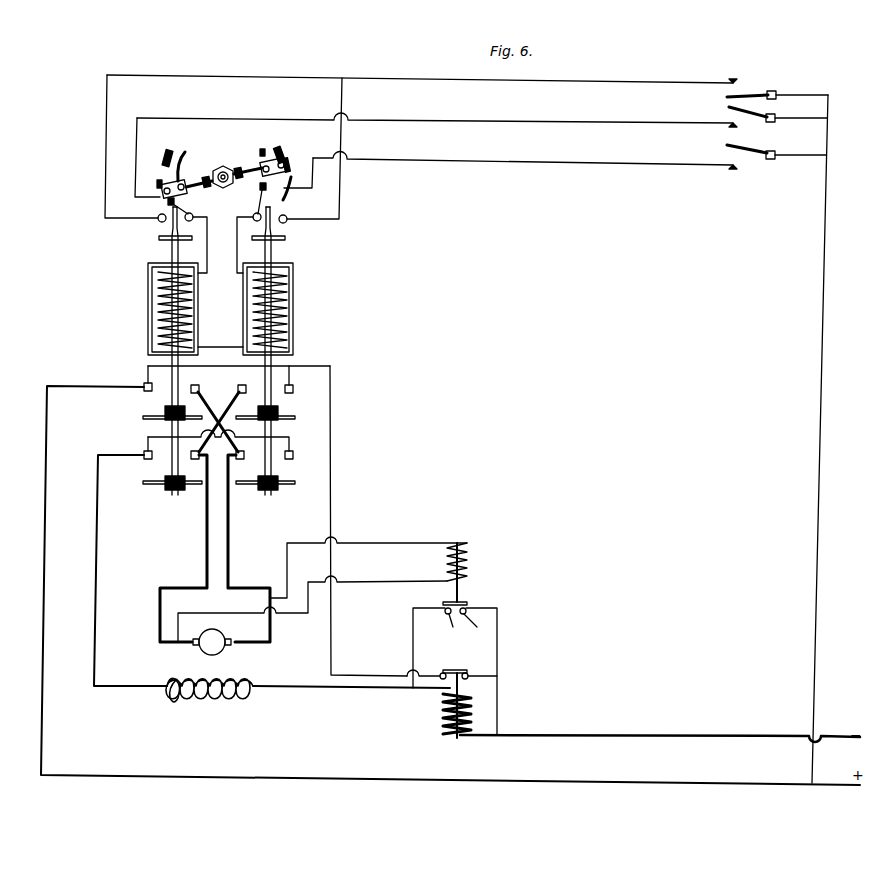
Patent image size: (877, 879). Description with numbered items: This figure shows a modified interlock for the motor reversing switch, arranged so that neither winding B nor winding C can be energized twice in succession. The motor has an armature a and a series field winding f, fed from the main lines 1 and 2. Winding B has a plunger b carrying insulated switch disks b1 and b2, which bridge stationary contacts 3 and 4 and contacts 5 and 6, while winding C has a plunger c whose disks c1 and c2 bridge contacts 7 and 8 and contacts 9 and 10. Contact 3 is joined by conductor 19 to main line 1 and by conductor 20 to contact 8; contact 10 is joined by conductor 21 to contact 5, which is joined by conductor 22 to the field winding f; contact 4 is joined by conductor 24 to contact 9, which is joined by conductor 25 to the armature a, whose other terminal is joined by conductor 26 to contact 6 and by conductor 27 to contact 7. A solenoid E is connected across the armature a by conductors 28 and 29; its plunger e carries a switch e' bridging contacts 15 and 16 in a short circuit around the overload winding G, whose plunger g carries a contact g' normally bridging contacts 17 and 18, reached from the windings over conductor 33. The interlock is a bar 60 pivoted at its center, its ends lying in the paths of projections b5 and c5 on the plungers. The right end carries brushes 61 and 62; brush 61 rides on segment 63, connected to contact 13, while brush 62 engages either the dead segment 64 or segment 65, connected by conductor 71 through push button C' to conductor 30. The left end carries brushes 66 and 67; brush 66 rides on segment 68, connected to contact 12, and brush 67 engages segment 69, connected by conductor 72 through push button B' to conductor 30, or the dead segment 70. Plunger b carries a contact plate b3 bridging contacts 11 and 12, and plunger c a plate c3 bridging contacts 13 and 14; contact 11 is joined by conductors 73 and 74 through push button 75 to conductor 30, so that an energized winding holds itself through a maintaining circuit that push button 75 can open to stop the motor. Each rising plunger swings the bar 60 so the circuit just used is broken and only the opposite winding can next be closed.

The main line 1 is at (667, 783).
The main line 2 is at (674, 733).
The stationary contact 3 is at (143, 391).
The stationary contact 4 is at (200, 389).
The stationary contact 5 is at (145, 459).
The stationary contact 6 is at (195, 460).
The stationary contact 7 is at (246, 388).
The stationary contact 8 is at (293, 389).
The stationary contact 9 is at (241, 460).
The stationary contact 10 is at (293, 456).
The stationary contact 11 is at (158, 216).
The stationary contact 12 is at (193, 215).
The stationary contact 13 is at (254, 215).
The stationary contact 14 is at (287, 218).
The contact 15 is at (445, 616).
The contact 16 is at (467, 615).
The stationary contact 17 is at (442, 672).
The stationary contact 18 is at (469, 672).
The conductor 19 is at (44, 569).
The conductor 20 is at (218, 350).
The conductor 21 is at (215, 436).
The conductor 22 is at (95, 569).
The conductor 24 is at (218, 420).
The conductor 25 is at (231, 568).
The conductor 26 is at (205, 554).
The conductor 27 is at (190, 431).
The conductor 28 is at (392, 544).
The conductor 29 is at (384, 583).
The conductor 30 is at (822, 376).
The conductor 33 is at (333, 485).
The bar 60 is at (226, 167).
The contact brush 61 is at (241, 176).
The contact brush 62 is at (289, 162).
The contact segment 63 is at (263, 149).
The contact segment 64 is at (283, 150).
The contact segment 65 is at (287, 197).
The brush 66 is at (206, 178).
The brush 67 is at (162, 189).
The contact segment 68 is at (188, 162).
The contact segment 69 is at (158, 158).
The contact segment 70 is at (167, 150).
The conductor 71 is at (471, 162).
The conductor 72 is at (472, 121).
The conductor 73 is at (106, 166).
The conductor 74 is at (418, 76).
The push button 75 is at (757, 92).
The electromagnetic winding B is at (155, 309).
The electromagnetic winding C is at (282, 309).
The push button B' is at (778, 122).
The push button C' is at (776, 166).
The plunger b is at (170, 358).
The plunger c is at (272, 345).
The switch disk b1 is at (143, 418).
The switch disk b2 is at (150, 487).
The contact plate b3 is at (160, 240).
The projection b5 is at (170, 230).
The switch disk c1 is at (295, 417).
The switch disk c2 is at (286, 485).
The contact plate c3 is at (285, 240).
The projection c5 is at (274, 230).
The armature a is at (222, 638).
The field winding f is at (212, 702).
The solenoid E is at (470, 563).
The plunger e is at (468, 594).
The switch e' is at (460, 630).
The overload winding G is at (466, 714).
The plunger g is at (470, 705).
The contact g' is at (458, 657).